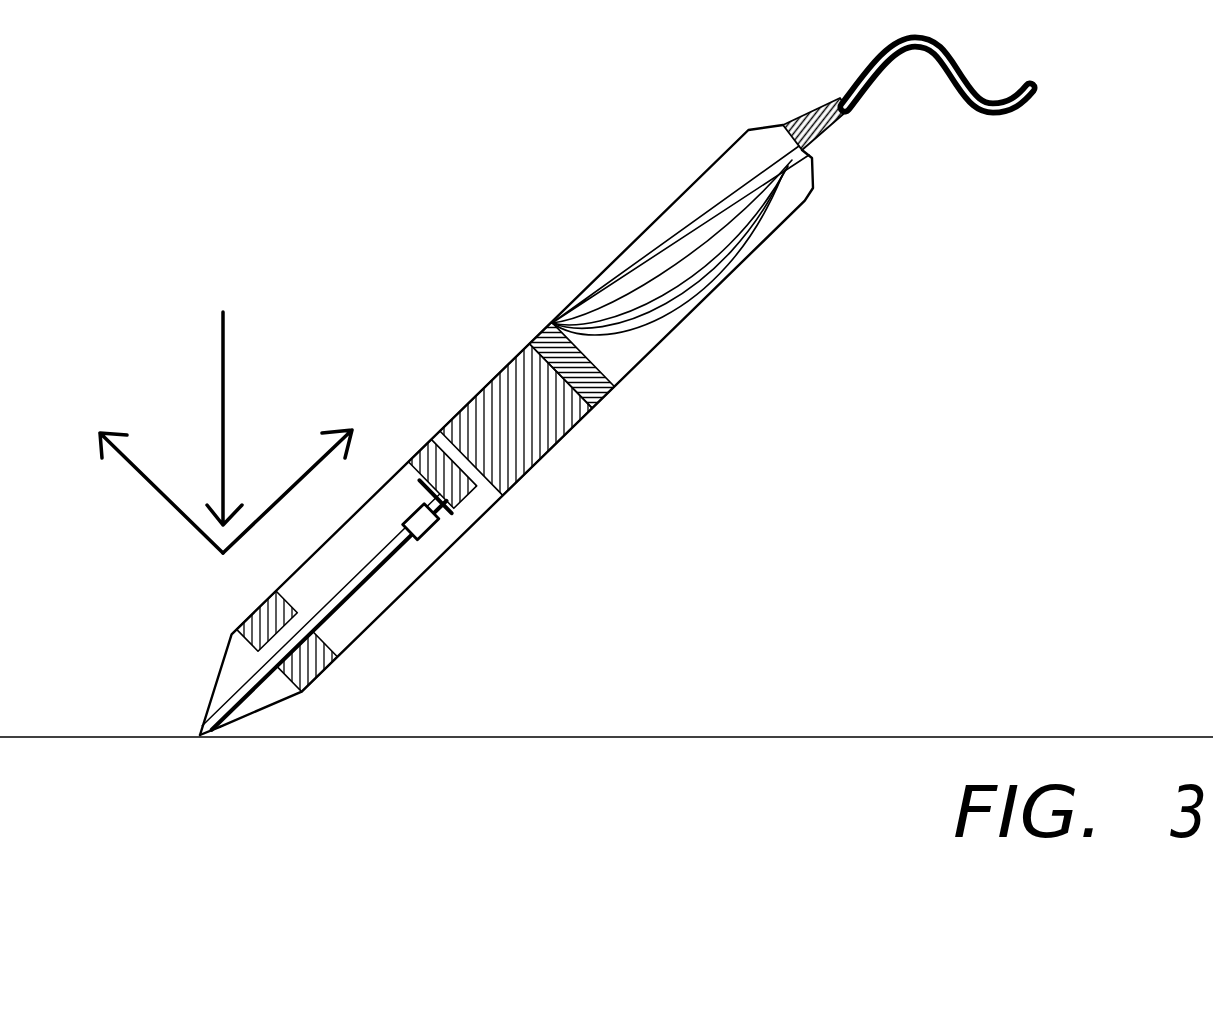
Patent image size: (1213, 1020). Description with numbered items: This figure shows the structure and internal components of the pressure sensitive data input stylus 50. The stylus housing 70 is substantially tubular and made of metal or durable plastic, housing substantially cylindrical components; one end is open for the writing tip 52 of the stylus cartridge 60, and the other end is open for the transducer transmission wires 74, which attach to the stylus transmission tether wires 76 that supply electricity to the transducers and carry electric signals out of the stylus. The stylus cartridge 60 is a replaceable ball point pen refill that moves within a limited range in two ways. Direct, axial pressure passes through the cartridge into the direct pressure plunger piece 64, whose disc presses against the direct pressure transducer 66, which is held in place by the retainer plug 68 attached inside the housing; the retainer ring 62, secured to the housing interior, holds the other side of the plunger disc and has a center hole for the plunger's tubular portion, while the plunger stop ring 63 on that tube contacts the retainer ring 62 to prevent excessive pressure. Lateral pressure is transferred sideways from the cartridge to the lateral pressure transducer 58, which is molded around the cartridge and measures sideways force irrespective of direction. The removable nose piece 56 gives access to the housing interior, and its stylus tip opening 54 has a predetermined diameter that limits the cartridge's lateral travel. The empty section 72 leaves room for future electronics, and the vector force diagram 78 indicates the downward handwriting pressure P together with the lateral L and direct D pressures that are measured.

The data input stylus 50 is at (518, 322).
The writing tip 52 is at (197, 735).
The stylus tip opening 54 is at (198, 716).
The nose piece 56 is at (255, 696).
The lateral pressure transducer 58 is at (310, 648).
The stylus cartridge 60 is at (374, 558).
The retainer ring 62 is at (478, 500).
The plunger stop ring 63 is at (443, 514).
The direct pressure plunger piece 64 is at (480, 493).
The direct pressure transducer 66 is at (530, 432).
The retainer plug 68 is at (592, 376).
The stylus housing 70 is at (687, 303).
The empty section 72 is at (724, 264).
The transducer transmission wires 74 is at (770, 182).
The stylus transmission tether wires 76 is at (993, 115).
The vector force diagram 78 is at (122, 368).